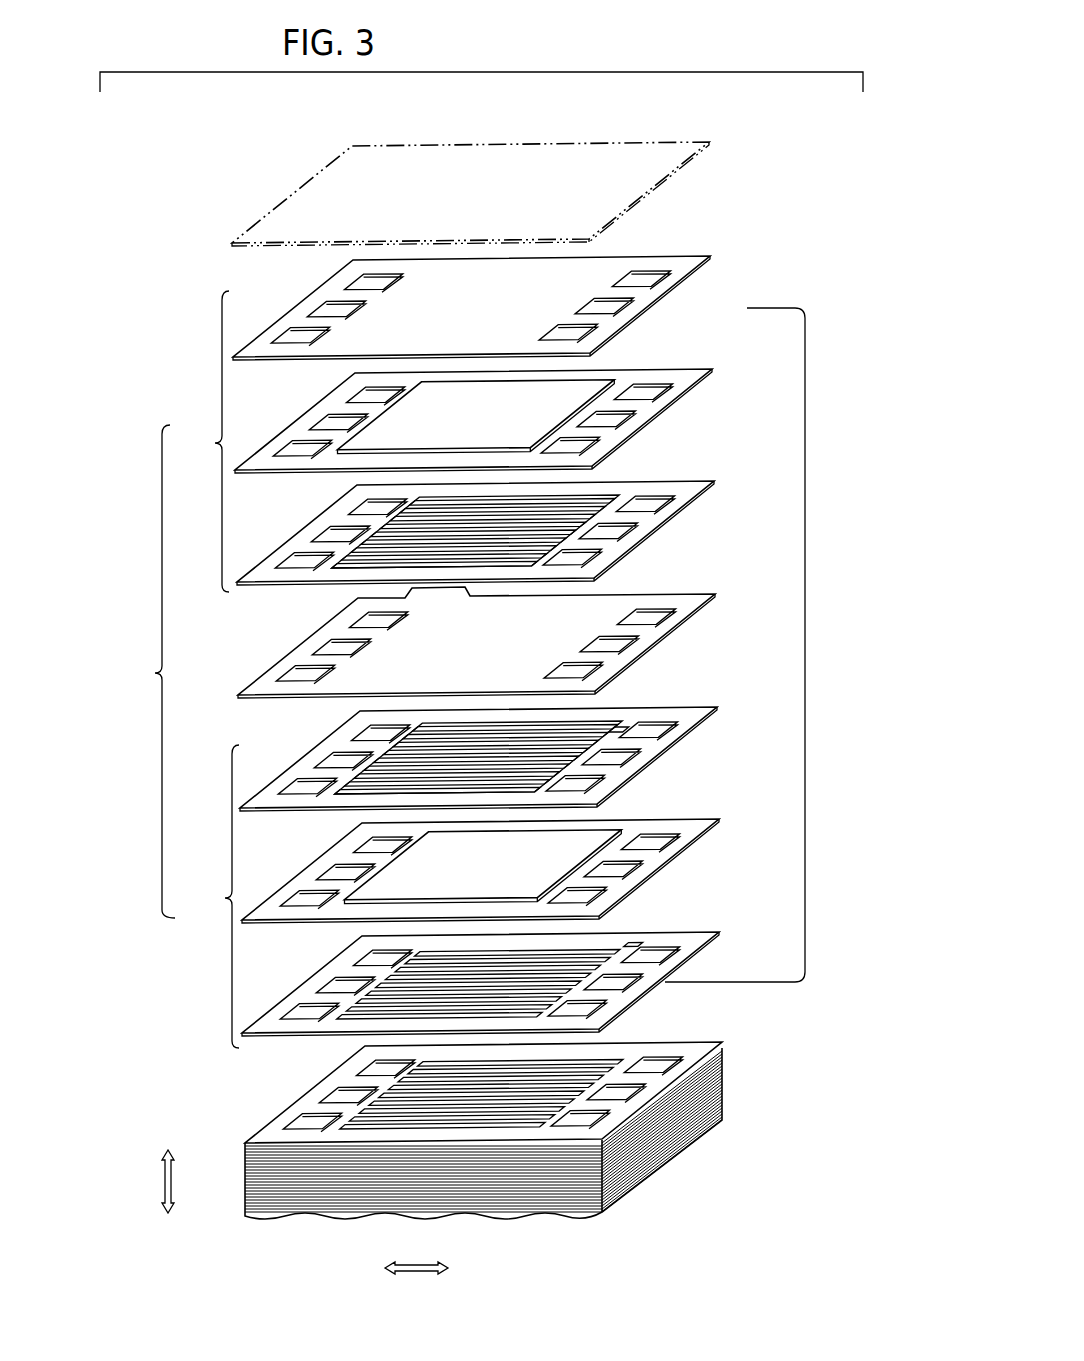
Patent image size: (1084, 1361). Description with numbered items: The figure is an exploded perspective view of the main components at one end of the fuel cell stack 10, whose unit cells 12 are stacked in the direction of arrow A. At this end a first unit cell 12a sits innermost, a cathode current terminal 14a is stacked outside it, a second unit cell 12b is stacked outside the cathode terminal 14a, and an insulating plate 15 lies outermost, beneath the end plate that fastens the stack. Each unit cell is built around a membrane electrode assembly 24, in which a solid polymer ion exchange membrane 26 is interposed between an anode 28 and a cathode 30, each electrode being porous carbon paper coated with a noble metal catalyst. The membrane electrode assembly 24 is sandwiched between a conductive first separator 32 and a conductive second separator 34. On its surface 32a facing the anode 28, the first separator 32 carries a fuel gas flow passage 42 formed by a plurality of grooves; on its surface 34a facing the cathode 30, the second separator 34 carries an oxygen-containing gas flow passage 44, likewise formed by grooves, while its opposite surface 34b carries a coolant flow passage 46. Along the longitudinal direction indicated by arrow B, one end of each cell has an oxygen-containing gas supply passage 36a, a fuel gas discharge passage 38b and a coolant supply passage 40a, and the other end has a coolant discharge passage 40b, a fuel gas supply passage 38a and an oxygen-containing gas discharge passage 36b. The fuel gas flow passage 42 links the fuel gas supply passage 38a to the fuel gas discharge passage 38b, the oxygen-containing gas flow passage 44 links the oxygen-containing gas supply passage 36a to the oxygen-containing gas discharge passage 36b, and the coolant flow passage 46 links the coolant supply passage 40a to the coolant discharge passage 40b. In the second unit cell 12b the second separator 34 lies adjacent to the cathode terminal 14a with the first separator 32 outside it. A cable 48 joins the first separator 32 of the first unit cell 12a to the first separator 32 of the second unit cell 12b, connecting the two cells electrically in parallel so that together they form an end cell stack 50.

The fuel cell stack 10 is at (789, 149).
The unit cells 12 is at (727, 1060).
The first unit cell 12a is at (207, 896).
The second unit cell 12b is at (197, 441).
The cathode current terminal 14a is at (707, 596).
The insulating plate 15 is at (588, 162).
The membrane electrode assembly 24 is at (484, 766).
The solid polymer ion exchange membrane 26 is at (491, 634).
The anode 28 is at (467, 412).
The cathode 30 is at (367, 470).
The first separator 32 is at (505, 638).
The surface of first separator 32a is at (633, 940).
The second separator 34 is at (490, 825).
The surface of second separator 34a is at (517, 497).
The surface of second separator 34b is at (598, 716).
The oxygen-containing gas supply passage 36a is at (363, 963).
The oxygen-containing gas discharge passage 36b is at (600, 1018).
The fuel gas supply passage 38a is at (631, 985).
The fuel gas discharge passage 38b is at (335, 980).
The coolant supply passage 40a is at (300, 1013).
The coolant discharge passage 40b is at (660, 958).
The fuel gas flow passage 42 is at (547, 287).
The oxygen-containing gas flow passage 44 is at (547, 512).
The coolant flow passage 46 is at (503, 753).
The cable 48 is at (805, 663).
The end cell stack 50 is at (148, 671).
The stacking direction arrow A is at (155, 1181).
The longitudinal direction arrow B is at (416, 1283).